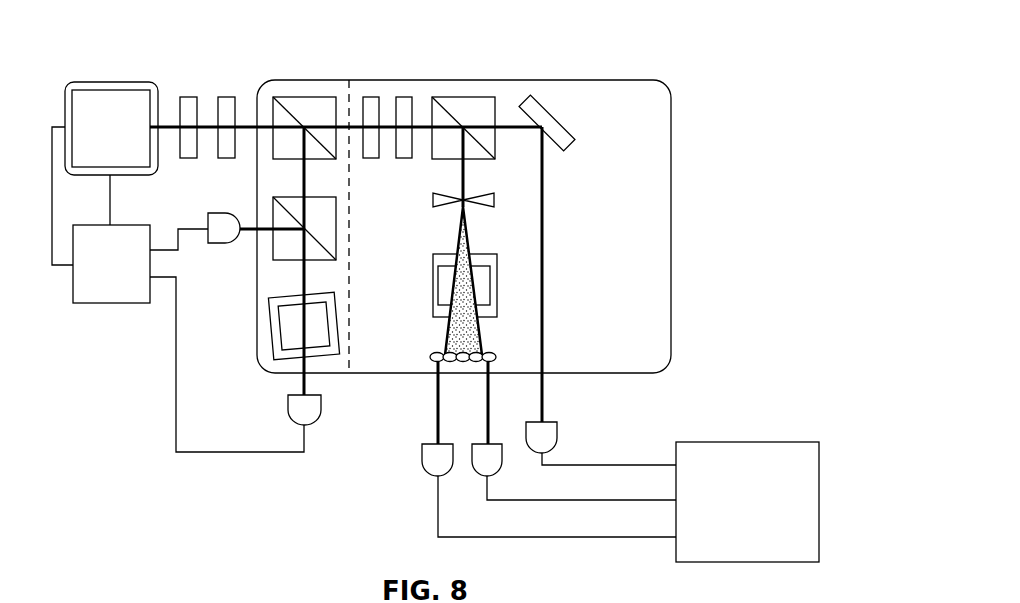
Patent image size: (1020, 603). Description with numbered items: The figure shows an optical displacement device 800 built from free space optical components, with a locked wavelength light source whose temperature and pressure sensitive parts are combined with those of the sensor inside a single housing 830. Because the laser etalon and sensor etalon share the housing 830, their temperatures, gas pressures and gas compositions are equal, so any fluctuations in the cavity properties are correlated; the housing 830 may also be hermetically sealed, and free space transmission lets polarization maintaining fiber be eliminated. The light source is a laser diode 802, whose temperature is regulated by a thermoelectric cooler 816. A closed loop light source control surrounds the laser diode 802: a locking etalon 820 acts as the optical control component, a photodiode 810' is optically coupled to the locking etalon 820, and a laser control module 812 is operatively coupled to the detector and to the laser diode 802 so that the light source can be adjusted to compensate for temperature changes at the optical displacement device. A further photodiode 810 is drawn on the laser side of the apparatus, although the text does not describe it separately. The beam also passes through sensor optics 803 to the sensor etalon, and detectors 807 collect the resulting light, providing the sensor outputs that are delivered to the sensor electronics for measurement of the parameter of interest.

The optical displacement device 800 is at (739, 25).
The laser diode 802 is at (100, 82).
The thermoelectric cooler 816 is at (130, 82).
The laser control module 812 is at (92, 303).
The photodetector 810 is at (205, 215).
The photodiode 810' is at (338, 424).
The locking etalon 820 is at (268, 318).
The sensor optics 803 is at (417, 97).
The housing 830 is at (618, 80).
The detectors 807 is at (428, 444).